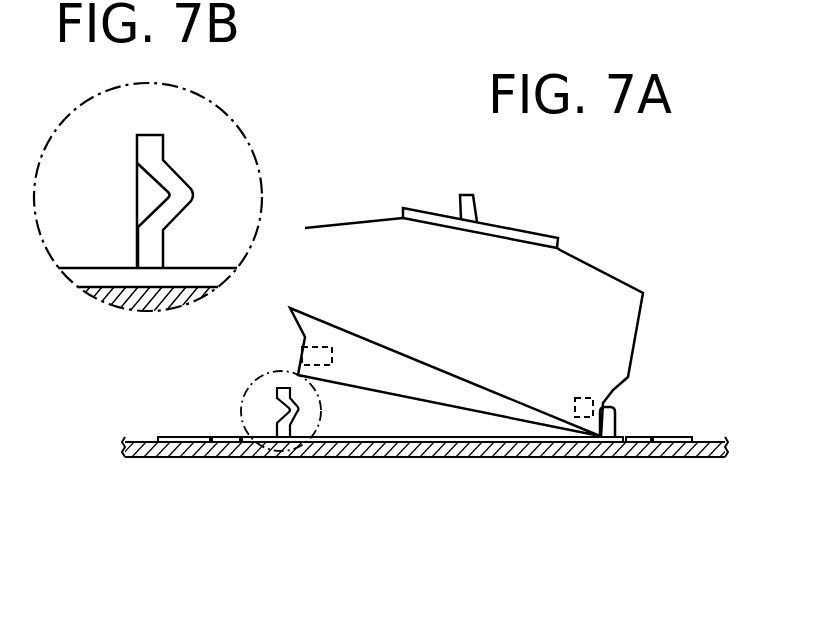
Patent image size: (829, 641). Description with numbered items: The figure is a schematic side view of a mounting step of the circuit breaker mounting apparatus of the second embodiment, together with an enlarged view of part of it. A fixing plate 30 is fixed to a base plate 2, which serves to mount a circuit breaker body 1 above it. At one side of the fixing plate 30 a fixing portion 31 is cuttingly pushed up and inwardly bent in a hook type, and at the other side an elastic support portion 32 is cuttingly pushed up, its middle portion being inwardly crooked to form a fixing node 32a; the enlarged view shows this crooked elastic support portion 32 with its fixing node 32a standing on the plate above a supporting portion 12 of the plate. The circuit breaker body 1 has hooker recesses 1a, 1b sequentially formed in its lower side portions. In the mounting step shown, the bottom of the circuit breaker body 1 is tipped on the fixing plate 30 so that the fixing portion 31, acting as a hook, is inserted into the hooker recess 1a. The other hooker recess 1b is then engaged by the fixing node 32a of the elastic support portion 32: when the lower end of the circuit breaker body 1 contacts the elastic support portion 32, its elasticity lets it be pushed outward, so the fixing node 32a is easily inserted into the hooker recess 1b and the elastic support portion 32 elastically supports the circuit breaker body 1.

In FIG. 7A, the circuit breaker body 1 is at (528, 260).
In FIG. 7A, the hooker recess 1a is at (578, 398).
In FIG. 7A, the hooker recess 1b is at (333, 360).
In FIG. 7A, the base plate 2 is at (125, 448).
In FIG. 7A, the supporting portion 12 is at (221, 423).
In FIG. 7A, the fixing plate 30 is at (485, 438).
In FIG. 7A, the fixing portion 31 is at (617, 420).
In FIG. 7A, the elastic support portion 32 is at (295, 422).
In FIG. 7B, the fixing node 32a is at (180, 195).